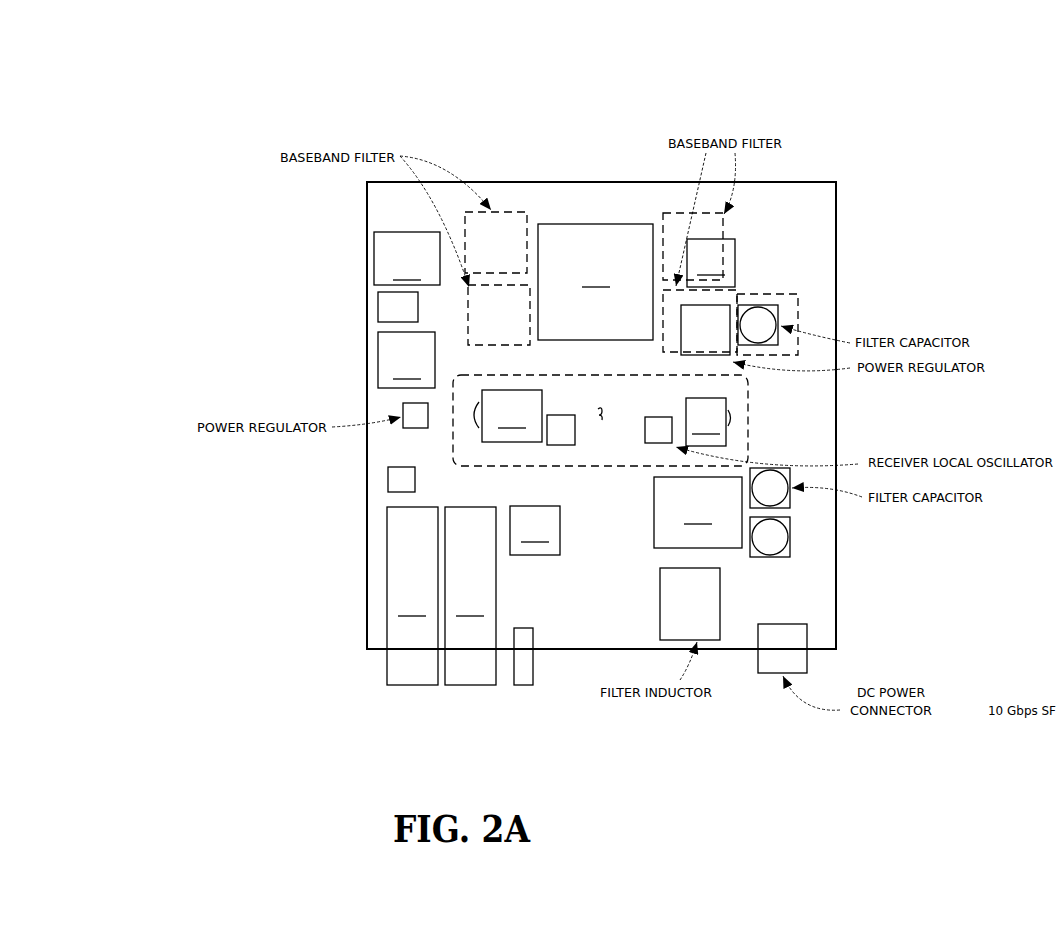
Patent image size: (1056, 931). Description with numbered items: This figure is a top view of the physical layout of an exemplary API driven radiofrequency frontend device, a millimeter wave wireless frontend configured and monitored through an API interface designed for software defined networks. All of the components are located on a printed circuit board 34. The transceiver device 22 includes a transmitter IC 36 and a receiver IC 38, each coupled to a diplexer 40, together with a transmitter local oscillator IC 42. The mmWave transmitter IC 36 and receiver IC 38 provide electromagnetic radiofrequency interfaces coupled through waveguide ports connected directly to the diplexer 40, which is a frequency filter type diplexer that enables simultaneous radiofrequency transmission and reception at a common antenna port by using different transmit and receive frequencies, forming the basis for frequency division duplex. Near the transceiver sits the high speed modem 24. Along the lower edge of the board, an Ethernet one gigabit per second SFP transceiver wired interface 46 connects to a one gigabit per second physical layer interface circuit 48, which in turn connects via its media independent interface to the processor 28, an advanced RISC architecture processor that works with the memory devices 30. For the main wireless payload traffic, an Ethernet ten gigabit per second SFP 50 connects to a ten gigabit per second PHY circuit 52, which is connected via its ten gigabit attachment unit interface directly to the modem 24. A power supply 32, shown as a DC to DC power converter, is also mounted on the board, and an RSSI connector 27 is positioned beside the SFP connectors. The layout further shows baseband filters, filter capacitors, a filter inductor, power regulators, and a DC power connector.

The transceiver device 22 is at (602, 481).
The modem 24 is at (612, 223).
The RSSI connector 27 is at (475, 748).
The processor 28 is at (377, 345).
The memory devices 30 is at (377, 309).
The power supply 32 is at (726, 550).
The printed circuit board 34 is at (840, 207).
The transmitter IC 36 is at (480, 398).
The receiver IC 38 is at (729, 396).
The diplexer 40 is at (753, 424).
The transmitter local oscillator IC 42 is at (546, 446).
The Ethernet 1 Gbps SFP transceiver wired interface 46 is at (386, 641).
The 1 Gbps physical layer interface circuit 48 is at (386, 482).
The Ethernet 10 Gbps SFP 50 is at (446, 687).
The 10 Gbps PHY circuit 52 is at (508, 504).